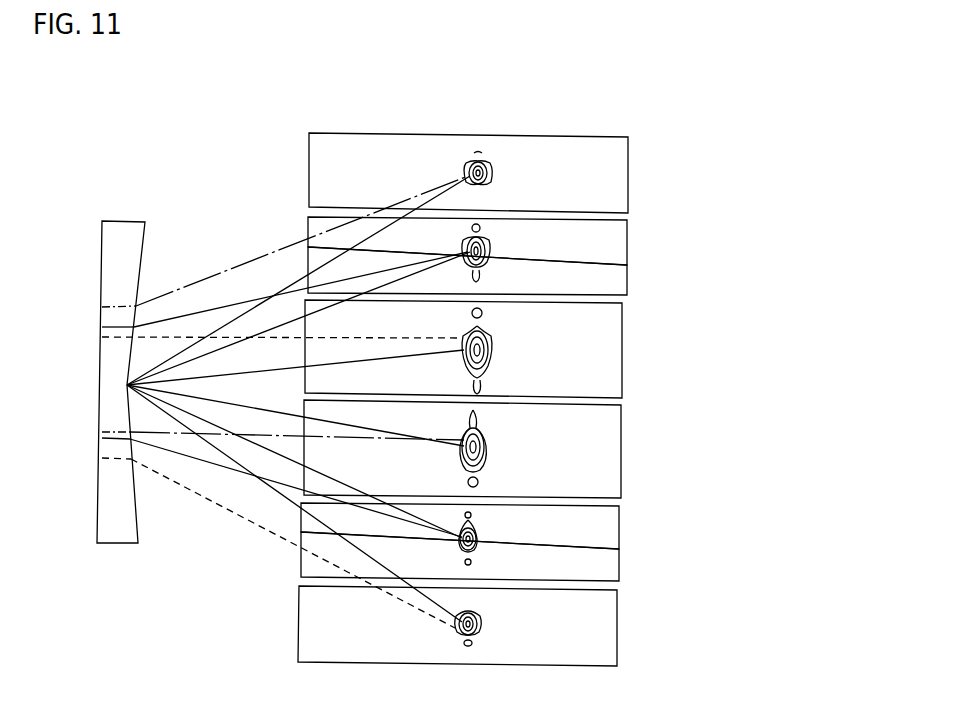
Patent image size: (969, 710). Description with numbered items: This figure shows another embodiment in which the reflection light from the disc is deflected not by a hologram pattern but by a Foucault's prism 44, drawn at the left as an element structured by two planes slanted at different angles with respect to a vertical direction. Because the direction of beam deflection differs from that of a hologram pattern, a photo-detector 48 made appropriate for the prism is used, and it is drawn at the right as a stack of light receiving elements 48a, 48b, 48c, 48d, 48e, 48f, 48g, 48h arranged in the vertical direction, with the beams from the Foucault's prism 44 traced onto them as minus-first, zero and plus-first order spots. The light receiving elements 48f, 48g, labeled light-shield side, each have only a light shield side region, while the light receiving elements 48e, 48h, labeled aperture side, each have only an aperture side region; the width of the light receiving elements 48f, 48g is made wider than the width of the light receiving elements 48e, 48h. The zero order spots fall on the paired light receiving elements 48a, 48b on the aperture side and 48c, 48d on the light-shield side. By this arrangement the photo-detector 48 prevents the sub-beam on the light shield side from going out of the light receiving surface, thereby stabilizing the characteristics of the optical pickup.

The Foucault's prism 44 is at (148, 212).
The photo-detector 48 is at (550, 117).
The light receiving element 48a is at (627, 234).
The light receiving element 48b is at (627, 284).
The light receiving element 48c is at (619, 533).
The light receiving element 48d is at (619, 570).
The light receiving element 48e is at (628, 153).
The light receiving element 48f is at (622, 380).
The light receiving element 48g is at (621, 484).
The light receiving element 48h is at (617, 656).